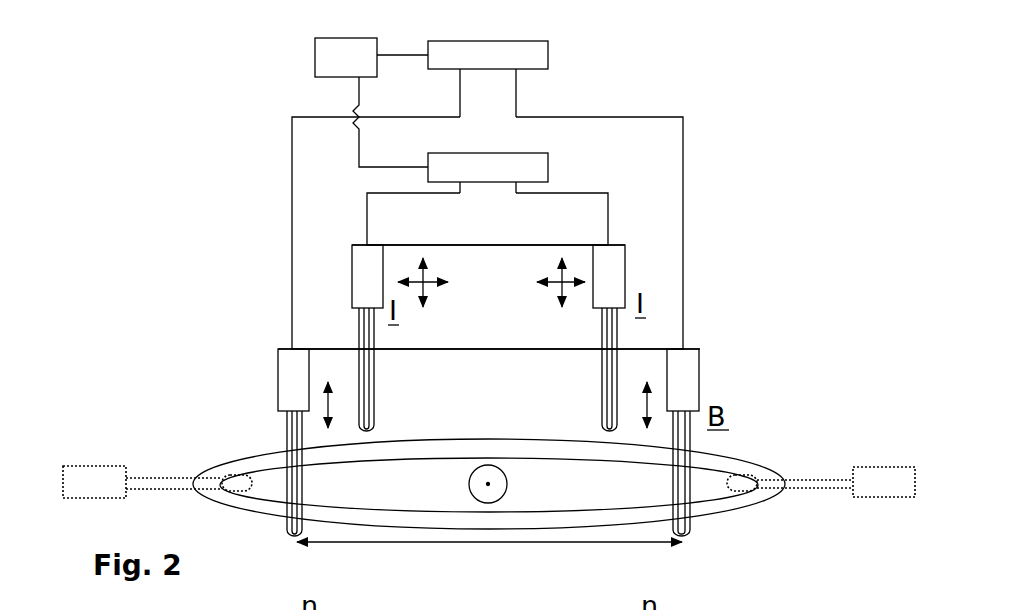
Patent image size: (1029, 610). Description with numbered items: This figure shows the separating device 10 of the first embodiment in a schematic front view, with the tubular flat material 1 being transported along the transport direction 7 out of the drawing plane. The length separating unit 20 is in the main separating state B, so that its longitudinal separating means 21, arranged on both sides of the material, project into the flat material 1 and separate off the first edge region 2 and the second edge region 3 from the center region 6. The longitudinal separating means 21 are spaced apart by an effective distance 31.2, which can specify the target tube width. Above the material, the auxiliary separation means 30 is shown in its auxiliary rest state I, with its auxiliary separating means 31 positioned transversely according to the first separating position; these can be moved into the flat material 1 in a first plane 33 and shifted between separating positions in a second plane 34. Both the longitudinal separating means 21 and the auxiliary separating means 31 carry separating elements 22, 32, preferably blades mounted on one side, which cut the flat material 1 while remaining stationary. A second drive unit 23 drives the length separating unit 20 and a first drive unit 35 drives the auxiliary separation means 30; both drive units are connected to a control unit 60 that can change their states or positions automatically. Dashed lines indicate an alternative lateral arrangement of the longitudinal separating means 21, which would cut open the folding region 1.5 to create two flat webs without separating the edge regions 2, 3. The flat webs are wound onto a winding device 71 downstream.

The separating device 10 is at (178, 88).
The control unit 60 is at (357, 63).
The second drive unit 23 is at (530, 51).
The first drive unit 35 is at (537, 167).
The auxiliary separation means 30 is at (652, 278).
The auxiliary separating means 31 is at (358, 262).
The separating element 32 is at (377, 387).
The first plane 33 is at (557, 293).
The second plane 34 is at (552, 277).
The length separating unit 20 is at (718, 372).
The longitudinal separating means 21 is at (80, 467).
The separating element 22 is at (290, 487).
The folding region 1.5 is at (205, 463).
The center region 6 is at (466, 428).
The tubular flat material 1 is at (725, 458).
The first edge region 2 is at (753, 457).
The second edge region 3 is at (233, 456).
The transport direction 7 is at (488, 497).
The effective distance 31.2 is at (467, 542).
The winding device 71 is at (675, 609).